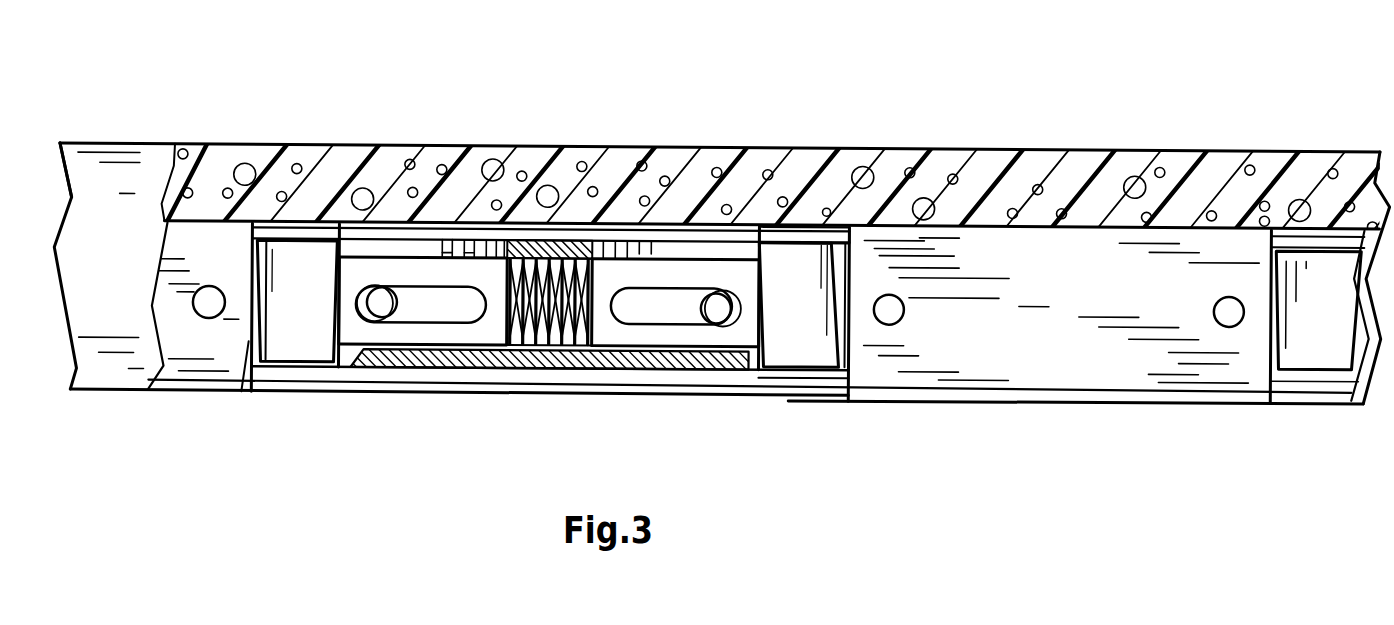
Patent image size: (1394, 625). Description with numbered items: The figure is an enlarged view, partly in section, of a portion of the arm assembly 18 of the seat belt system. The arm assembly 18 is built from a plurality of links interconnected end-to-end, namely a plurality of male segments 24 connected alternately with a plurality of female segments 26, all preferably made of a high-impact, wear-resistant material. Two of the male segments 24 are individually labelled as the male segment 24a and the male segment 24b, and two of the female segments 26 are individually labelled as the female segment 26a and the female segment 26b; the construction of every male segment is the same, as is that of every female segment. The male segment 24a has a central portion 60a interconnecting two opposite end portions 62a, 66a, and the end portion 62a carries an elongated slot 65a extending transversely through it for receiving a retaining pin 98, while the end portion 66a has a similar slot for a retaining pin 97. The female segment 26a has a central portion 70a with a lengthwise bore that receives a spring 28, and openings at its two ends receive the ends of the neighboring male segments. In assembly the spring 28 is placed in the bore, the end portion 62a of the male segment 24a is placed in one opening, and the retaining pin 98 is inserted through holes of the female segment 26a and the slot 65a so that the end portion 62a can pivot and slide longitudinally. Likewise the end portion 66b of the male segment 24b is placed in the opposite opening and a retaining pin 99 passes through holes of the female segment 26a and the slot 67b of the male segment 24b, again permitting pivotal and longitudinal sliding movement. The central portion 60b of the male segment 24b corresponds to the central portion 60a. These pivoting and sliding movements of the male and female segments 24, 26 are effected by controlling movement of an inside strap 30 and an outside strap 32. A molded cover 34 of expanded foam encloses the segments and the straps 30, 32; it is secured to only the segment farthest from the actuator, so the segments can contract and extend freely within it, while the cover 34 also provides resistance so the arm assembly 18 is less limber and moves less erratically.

The arm assembly 18 is at (998, 95).
The male segments 24 is at (295, 243).
The male segment 24a is at (315, 273).
The male segment 24b is at (822, 338).
The female segments 26 is at (458, 253).
The female segment 26a is at (482, 250).
The female segment 26b is at (1088, 307).
The spring 28 is at (537, 335).
The inside strap 30 is at (793, 377).
The outside strap 32 is at (822, 225).
The molded cover 34 is at (107, 190).
The central portion 60a is at (298, 330).
The second slide block 60b is at (793, 263).
The end portion 62a is at (427, 330).
The elongated slot 65a is at (427, 287).
The end portion 66a is at (252, 340).
The end portion 66b is at (723, 340).
The slot 67b is at (680, 293).
The central portion 70a is at (565, 240).
The retaining pin 97 is at (210, 305).
The retaining pin 98 is at (383, 303).
The retaining pin 99 is at (700, 315).